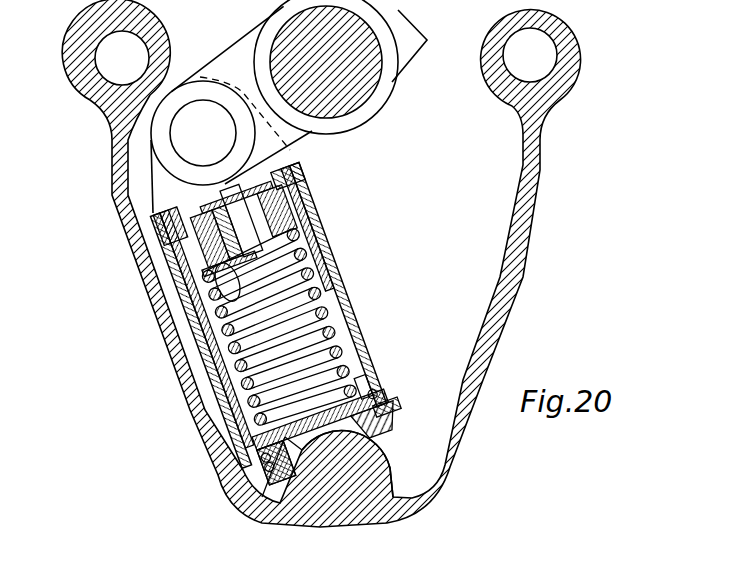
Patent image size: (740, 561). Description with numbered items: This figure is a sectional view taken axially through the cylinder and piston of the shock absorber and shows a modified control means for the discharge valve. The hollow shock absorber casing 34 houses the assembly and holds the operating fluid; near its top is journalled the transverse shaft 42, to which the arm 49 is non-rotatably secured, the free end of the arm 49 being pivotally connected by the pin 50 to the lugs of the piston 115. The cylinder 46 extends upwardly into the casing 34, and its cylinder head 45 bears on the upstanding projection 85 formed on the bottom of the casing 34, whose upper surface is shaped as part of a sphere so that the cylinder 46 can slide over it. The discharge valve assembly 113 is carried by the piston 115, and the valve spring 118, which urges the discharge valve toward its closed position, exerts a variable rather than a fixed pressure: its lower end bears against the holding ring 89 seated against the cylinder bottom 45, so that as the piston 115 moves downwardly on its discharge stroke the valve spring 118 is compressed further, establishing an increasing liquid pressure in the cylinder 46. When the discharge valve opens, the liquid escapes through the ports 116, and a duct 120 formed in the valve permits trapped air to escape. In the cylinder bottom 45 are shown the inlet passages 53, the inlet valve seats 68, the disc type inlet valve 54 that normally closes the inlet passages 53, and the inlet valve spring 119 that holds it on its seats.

The shock absorber casing 34 is at (528, 207).
The transverse shaft 42 is at (364, 78).
The cylinder head 45 is at (389, 412).
The cylinder 46 is at (366, 342).
The arm 49 is at (230, 70).
The pin 50 is at (203, 133).
The inlet passages 53 is at (373, 445).
The disc type inlet valve 54 is at (265, 465).
The inlet valve seats 68 is at (267, 490).
The upstanding projection 85 is at (330, 457).
The holding ring 89 is at (368, 392).
The piston 113 is at (190, 245).
The piston 115 is at (316, 245).
The ports 116 is at (288, 161).
The valve spring 118 is at (317, 313).
The inlet valve spring 119 is at (266, 448).
The duct 120 is at (213, 303).